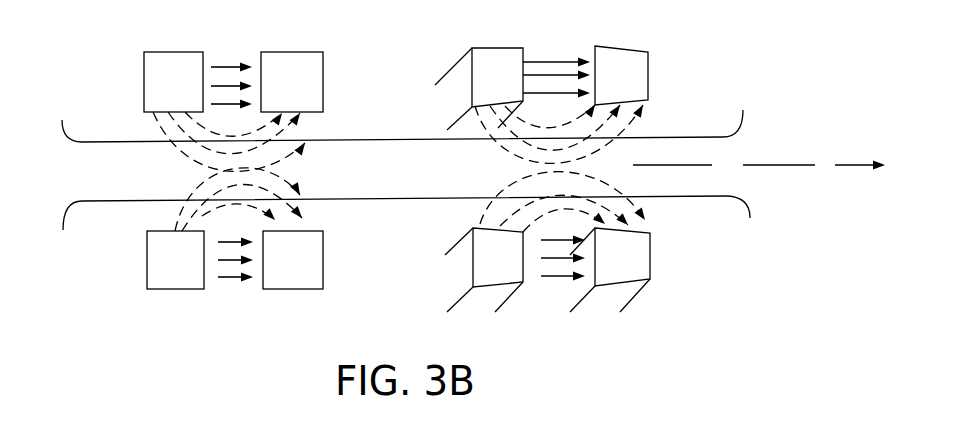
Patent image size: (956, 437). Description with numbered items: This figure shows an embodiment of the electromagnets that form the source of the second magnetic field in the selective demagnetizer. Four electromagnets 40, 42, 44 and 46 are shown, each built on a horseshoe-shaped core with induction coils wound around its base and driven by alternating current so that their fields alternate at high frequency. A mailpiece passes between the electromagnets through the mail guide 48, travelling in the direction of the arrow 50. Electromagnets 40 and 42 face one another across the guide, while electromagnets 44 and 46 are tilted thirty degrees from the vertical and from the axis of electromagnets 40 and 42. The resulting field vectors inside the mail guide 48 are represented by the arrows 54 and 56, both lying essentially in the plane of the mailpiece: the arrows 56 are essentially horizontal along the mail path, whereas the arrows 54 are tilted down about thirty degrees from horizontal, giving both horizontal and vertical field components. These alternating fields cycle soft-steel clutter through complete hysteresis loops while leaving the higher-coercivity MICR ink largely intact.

The electromagnet 40 is at (313, 289).
The electromagnet 42 is at (283, 52).
The electromagnet 44 is at (644, 258).
The electromagnet 46 is at (656, 37).
The mail guide 48 is at (697, 137).
The arrow 50 is at (840, 164).
The arrows 54 is at (600, 178).
The arrows 56 is at (304, 147).